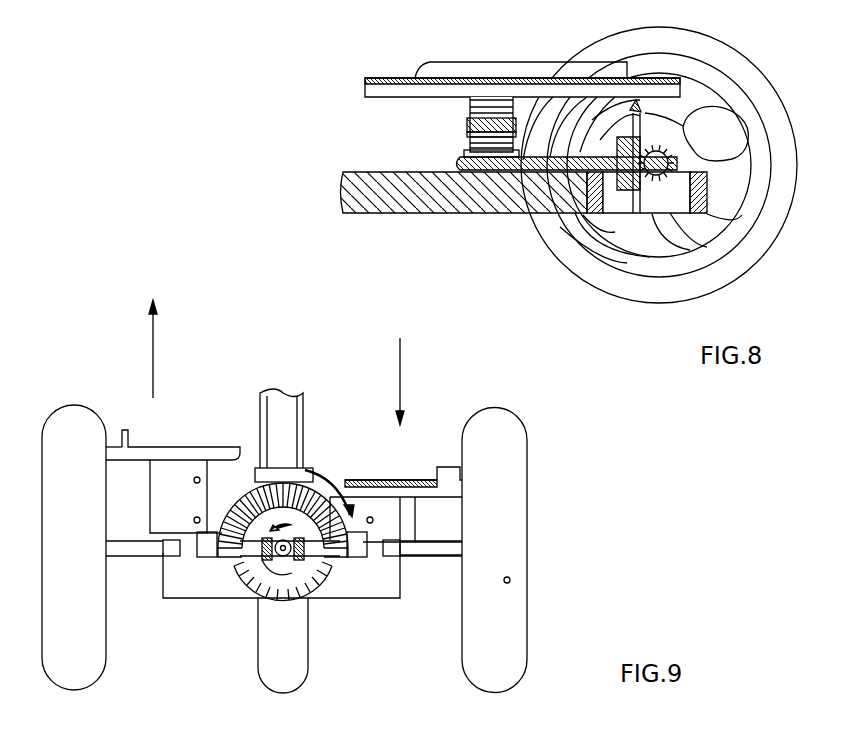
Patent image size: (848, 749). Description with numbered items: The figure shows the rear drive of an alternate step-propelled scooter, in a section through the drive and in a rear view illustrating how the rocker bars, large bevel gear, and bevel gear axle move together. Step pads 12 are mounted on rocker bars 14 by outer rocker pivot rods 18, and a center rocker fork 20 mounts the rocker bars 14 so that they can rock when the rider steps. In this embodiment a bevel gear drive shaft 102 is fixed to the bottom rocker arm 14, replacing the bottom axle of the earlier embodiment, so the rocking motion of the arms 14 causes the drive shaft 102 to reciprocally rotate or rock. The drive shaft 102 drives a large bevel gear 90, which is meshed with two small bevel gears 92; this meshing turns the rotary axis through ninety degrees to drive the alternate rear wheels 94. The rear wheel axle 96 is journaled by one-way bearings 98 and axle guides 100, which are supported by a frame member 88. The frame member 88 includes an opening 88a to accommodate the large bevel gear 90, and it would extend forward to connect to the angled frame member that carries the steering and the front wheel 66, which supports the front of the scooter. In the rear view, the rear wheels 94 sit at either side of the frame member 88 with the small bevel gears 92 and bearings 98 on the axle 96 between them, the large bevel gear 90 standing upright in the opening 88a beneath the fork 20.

In FIG. 8, the step pad 12 is at (455, 72).
In FIG. 9, the step pad 12 is at (172, 447).
In FIG. 8, the rocker bar 14 is at (470, 113).
In FIG. 8, the outer rocker pivot rod 18 is at (497, 118).
In FIG. 8, the center rocker fork 20 is at (463, 150).
In FIG. 9, the front wheel 66 is at (298, 652).
In FIG. 8, the frame member 88 is at (440, 213).
In FIG. 9, the frame member 88 is at (203, 600).
In FIG. 8, the opening 88a is at (640, 214).
In FIG. 8, the large bevel gear 90 is at (682, 124).
In FIG. 9, the large bevel gear 90 is at (222, 500).
In FIG. 8, the small bevel gear 92 is at (655, 160).
In FIG. 9, the small bevel gear 92 is at (240, 557).
In FIG. 8, the rear wheel 94 is at (735, 62).
In FIG. 9, the rear wheel 94 is at (82, 425).
In FIG. 9, the rear wheel axle 96 is at (125, 545).
In FIG. 9, the one-way bearing 98 is at (190, 552).
In FIG. 9, the axle guide 100 is at (160, 548).
In FIG. 8, the bevel gear drive shaft 102 is at (455, 166).
In FIG. 9, the bevel gear drive shaft 102 is at (310, 557).